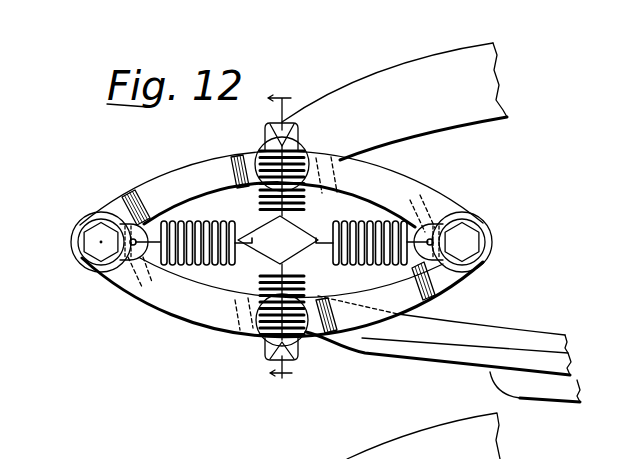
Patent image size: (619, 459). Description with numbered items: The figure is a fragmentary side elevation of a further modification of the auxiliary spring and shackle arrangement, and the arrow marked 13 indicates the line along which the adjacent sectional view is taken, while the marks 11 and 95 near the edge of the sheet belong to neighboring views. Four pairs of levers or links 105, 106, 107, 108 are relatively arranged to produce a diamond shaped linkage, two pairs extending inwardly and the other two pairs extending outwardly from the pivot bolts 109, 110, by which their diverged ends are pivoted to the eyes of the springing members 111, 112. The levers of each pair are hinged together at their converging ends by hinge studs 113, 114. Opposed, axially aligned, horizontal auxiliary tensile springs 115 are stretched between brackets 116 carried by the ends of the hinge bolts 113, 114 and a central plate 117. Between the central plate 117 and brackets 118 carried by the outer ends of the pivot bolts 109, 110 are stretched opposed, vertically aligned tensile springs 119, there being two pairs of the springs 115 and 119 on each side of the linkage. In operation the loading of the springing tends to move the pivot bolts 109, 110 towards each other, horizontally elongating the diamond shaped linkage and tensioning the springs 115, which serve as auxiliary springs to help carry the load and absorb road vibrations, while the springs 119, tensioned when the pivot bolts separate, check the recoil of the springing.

The pair of levers or links 105 is at (356, 172).
The pair of levers or links 106 is at (380, 287).
The pair of levers or links 107 is at (163, 190).
The pair of levers or links 108 is at (176, 312).
The pivot bolt 109 is at (260, 146).
The pivot bolt 110 is at (262, 317).
The springing member 111 is at (524, 70).
The springing member 112 is at (555, 347).
The hinge stud 113 is at (488, 238).
The hinge stud 114 is at (100, 241).
The horizontal auxiliary tensile spring 115 is at (185, 263).
The bracket 116 is at (428, 236).
The central plate 117 is at (278, 240).
The bracket 118 is at (264, 131).
The vertically aligned tensile spring 119 is at (225, 160).
The section line for Fig. 13 is at (280, 239).
The numeral of adjacent figure 11 is at (281, 451).
The numeral of adjacent figure 95 is at (428, 455).